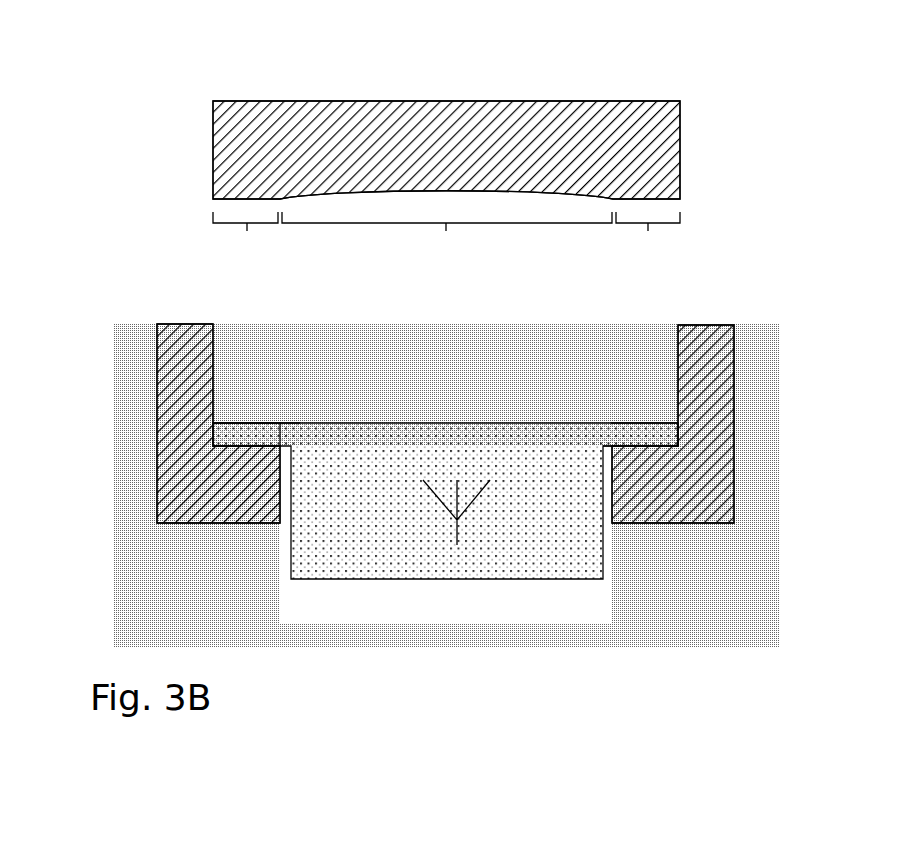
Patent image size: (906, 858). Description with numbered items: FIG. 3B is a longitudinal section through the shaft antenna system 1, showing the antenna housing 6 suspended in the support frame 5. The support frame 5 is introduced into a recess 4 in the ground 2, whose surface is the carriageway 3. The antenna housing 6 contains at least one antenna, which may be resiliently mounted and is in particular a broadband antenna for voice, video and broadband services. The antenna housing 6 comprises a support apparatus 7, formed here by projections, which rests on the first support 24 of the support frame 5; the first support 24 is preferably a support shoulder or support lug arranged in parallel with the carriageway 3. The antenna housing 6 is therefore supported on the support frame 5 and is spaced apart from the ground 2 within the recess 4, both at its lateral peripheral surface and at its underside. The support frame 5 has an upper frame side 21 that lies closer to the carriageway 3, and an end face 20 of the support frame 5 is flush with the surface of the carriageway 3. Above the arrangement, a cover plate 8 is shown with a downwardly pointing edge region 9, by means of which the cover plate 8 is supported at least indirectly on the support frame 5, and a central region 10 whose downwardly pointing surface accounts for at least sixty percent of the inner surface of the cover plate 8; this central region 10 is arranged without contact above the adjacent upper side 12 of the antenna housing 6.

The shaft antenna system 1 is at (95, 188).
The ground 2 is at (121, 432).
The carriageway 3 is at (131, 320).
The recess 4 is at (389, 616).
The support frame 5 is at (706, 328).
The antenna housing 6 is at (354, 530).
The support apparatus 7 is at (265, 440).
The cover plate 8 is at (426, 107).
The edge region 9 is at (446, 241).
The central region 10 is at (447, 241).
The upper side 12 is at (415, 422).
The end face 20 is at (181, 320).
The upper frame side 21 is at (252, 371).
The first support 24 is at (617, 446).